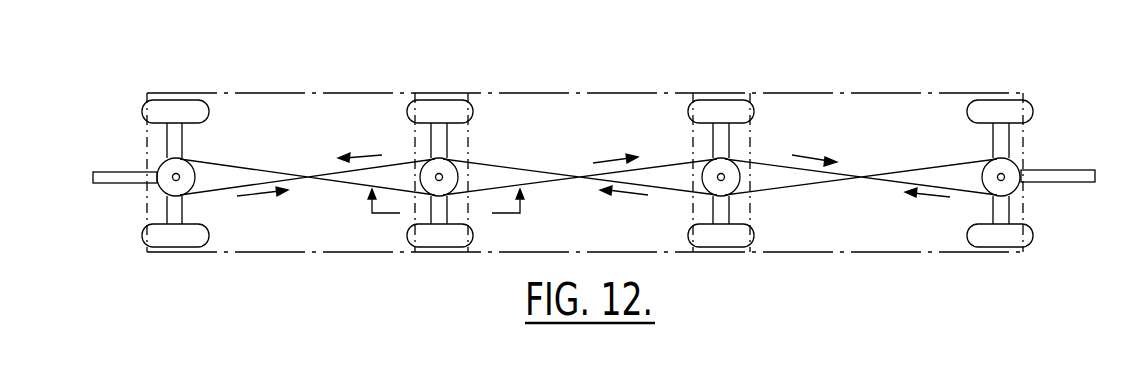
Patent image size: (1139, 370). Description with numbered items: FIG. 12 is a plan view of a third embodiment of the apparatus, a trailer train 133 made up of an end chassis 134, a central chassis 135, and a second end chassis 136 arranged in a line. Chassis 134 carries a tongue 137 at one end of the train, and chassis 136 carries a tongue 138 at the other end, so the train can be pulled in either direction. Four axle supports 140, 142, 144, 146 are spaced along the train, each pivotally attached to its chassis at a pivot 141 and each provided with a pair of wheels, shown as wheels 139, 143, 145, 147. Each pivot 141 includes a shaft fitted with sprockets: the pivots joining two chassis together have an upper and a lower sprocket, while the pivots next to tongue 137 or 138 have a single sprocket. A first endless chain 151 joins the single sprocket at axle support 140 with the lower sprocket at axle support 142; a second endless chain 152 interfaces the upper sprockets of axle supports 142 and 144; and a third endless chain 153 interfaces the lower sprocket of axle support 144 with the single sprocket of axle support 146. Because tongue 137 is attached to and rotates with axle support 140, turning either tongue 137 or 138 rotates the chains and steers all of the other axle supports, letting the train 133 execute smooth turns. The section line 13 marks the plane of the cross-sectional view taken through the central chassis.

The section line 13- 13 is at (445, 203).
The trailer train 133 is at (842, 82).
The end chassis 134 is at (320, 110).
The central chassis 135 is at (648, 103).
The end chassis 136 is at (907, 102).
The tongue 137 is at (122, 172).
The tongue 138 is at (1078, 182).
The wheels 139 is at (168, 112).
The axle support 140 is at (170, 208).
The pivot 141 is at (177, 176).
The axle support 142 is at (444, 137).
The wheels 143 is at (438, 112).
The axle support 144 is at (722, 212).
The wheels 145 is at (718, 110).
The axle support 146 is at (995, 137).
The wheels 147 is at (993, 105).
The first endless chain 151 is at (393, 158).
The second endless chain 152 is at (534, 168).
The third endless chain 153 is at (787, 189).